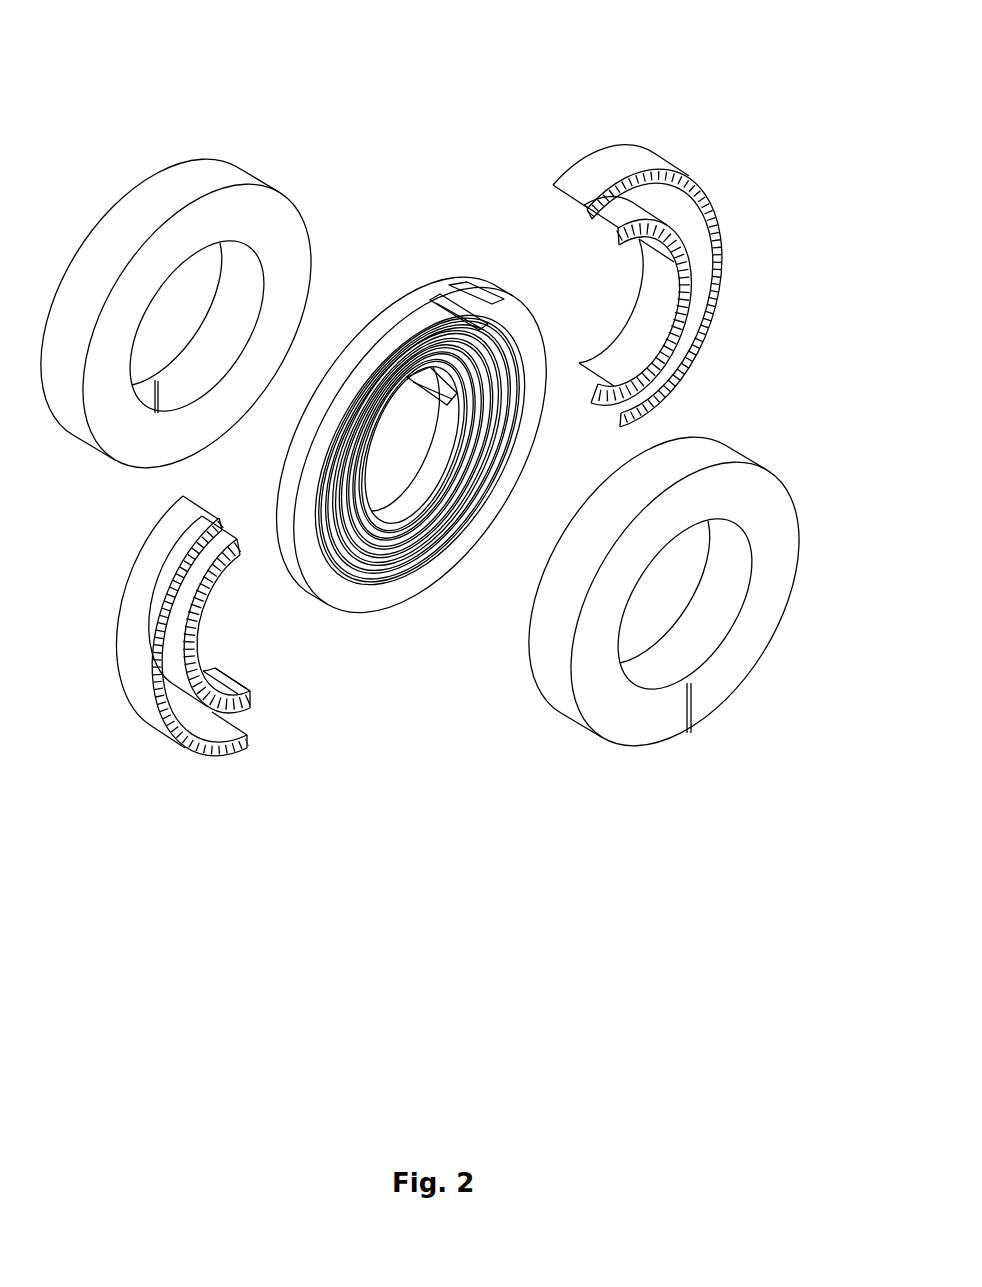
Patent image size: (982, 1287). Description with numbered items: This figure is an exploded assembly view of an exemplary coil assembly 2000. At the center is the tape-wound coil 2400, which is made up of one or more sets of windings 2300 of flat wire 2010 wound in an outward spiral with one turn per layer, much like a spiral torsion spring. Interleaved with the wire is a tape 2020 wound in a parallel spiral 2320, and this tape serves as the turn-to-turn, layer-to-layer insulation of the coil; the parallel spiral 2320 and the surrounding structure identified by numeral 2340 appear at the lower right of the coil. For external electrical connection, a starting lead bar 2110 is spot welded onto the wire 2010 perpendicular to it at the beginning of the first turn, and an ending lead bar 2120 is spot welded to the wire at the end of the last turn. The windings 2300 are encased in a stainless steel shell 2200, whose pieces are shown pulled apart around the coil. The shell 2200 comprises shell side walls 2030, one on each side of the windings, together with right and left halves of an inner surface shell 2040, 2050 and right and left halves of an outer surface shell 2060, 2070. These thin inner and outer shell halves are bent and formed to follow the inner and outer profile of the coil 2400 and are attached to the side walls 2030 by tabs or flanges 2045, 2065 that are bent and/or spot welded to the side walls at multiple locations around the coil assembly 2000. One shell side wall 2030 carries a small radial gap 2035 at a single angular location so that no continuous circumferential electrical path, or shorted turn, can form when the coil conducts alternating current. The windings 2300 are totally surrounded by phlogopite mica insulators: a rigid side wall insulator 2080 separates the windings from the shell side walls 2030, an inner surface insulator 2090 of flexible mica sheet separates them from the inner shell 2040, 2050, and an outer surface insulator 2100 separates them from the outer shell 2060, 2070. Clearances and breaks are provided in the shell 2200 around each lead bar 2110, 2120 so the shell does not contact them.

The coil assembly 2000 is at (119, 42).
The flat wire 2010 is at (412, 328).
The tape 2020 is at (433, 307).
The shell side wall 2030 is at (131, 184).
The radial gap 2035 is at (693, 737).
The inner surface shell right half 2040 is at (655, 298).
The tab/flange 2045 is at (253, 707).
The inner surface shell left half 2050 is at (212, 597).
The outer surface shell right half 2060 is at (643, 153).
The tab/flange 2065 is at (258, 743).
The outer surface shell left half 2070 is at (172, 553).
The side wall insulator 2080 is at (277, 188).
The inner surface insulator 2090 is at (457, 447).
The outer surface insulator 2100 is at (463, 278).
The starting lead bar 2110 is at (453, 382).
The ending lead bar 2120 is at (478, 327).
The shell 2200 is at (589, 86).
The windings 2300 is at (476, 647).
The parallel spiral 2320 is at (519, 609).
The coil rim 2340 is at (548, 564).
The tape-wound coil 2400 is at (269, 481).